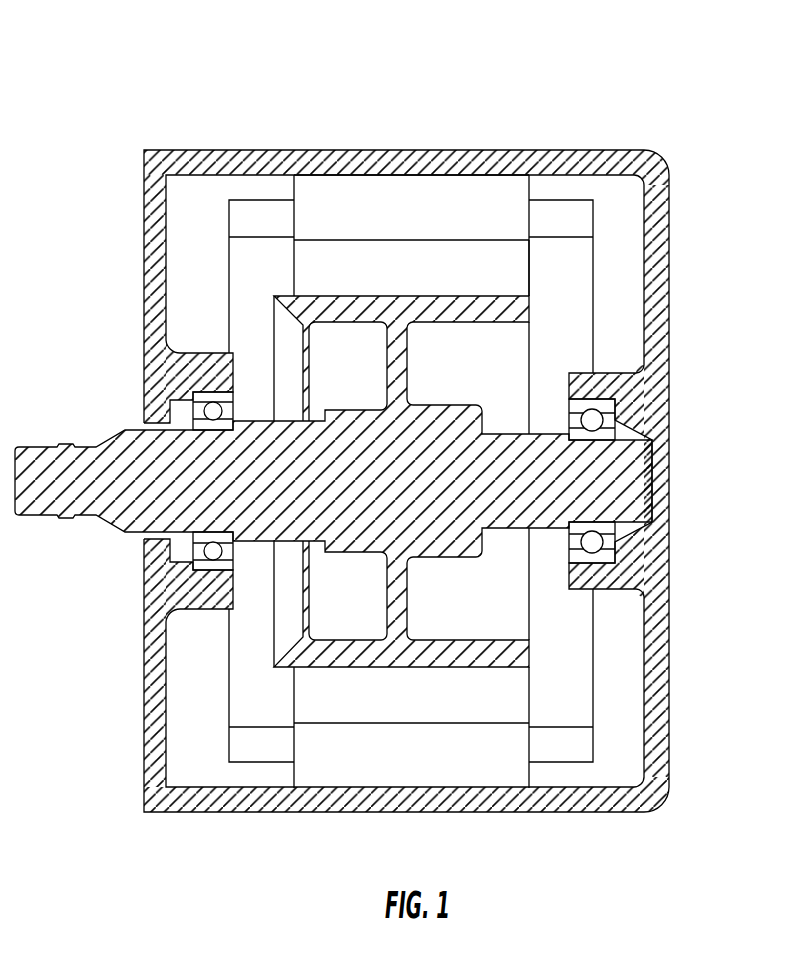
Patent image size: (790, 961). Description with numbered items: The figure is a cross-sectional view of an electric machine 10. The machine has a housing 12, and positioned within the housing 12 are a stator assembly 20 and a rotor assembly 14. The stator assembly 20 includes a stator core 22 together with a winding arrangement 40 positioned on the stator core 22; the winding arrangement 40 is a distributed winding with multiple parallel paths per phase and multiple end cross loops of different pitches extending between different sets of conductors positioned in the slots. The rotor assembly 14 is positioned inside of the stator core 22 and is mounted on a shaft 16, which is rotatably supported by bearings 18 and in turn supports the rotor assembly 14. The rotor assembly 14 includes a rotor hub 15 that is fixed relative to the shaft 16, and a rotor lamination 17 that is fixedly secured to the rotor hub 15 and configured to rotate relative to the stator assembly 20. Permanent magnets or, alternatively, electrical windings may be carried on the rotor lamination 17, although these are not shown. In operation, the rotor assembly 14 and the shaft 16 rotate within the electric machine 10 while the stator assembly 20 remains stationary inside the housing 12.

The electric machine 10 is at (104, 72).
The housing 12 is at (375, 150).
The rotor assembly 14 is at (424, 277).
The rotor hub 15 is at (523, 310).
The shaft 16 is at (448, 522).
The rotor lamination 17 is at (515, 273).
The bearings 18 is at (207, 410).
The stator assembly 20 is at (424, 219).
The stator core 22 is at (477, 190).
The winding arrangement 40 is at (583, 217).